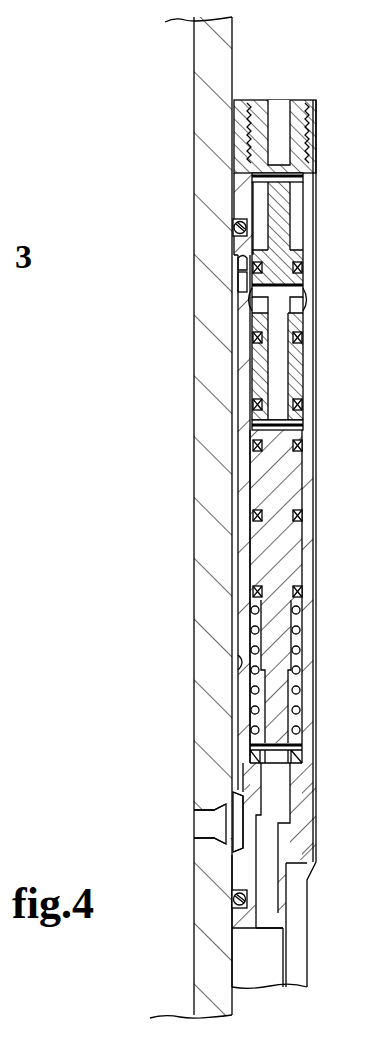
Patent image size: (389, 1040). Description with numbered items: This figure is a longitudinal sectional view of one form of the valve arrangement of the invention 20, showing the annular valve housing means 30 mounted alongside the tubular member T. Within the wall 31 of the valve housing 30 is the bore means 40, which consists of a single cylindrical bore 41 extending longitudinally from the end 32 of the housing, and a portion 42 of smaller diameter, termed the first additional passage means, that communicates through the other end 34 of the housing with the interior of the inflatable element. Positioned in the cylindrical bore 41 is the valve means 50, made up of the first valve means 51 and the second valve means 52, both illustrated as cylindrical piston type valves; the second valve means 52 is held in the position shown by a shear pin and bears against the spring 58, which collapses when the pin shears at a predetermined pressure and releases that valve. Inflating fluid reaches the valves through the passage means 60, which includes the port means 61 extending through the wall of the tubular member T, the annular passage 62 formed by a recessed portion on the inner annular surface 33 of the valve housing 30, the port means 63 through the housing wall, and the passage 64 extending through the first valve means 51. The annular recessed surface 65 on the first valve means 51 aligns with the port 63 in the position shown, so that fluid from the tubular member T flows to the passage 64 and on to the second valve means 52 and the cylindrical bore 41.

The tubular member T is at (194, 497).
The invention 20 is at (252, 518).
The annular valve housing means 30 is at (318, 640).
The wall 31 is at (243, 229).
The end 32 is at (302, 100).
The inner annular surface 33 is at (232, 197).
The other end 34 is at (262, 930).
The bore means 40 is at (303, 458).
The cylindrical bore 41 is at (304, 358).
The portion of smaller diameter 42 is at (290, 788).
The valve means 50 is at (247, 433).
The first valve means 51 is at (238, 262).
The second valve means 52 is at (303, 650).
The spring 58 is at (302, 687).
The passage means 60 is at (214, 830).
The port means 61 is at (194, 812).
The annular passage 62 is at (236, 656).
The port means 63 is at (238, 296).
The passage 64 is at (280, 356).
The annular recessed surface 65 is at (300, 298).